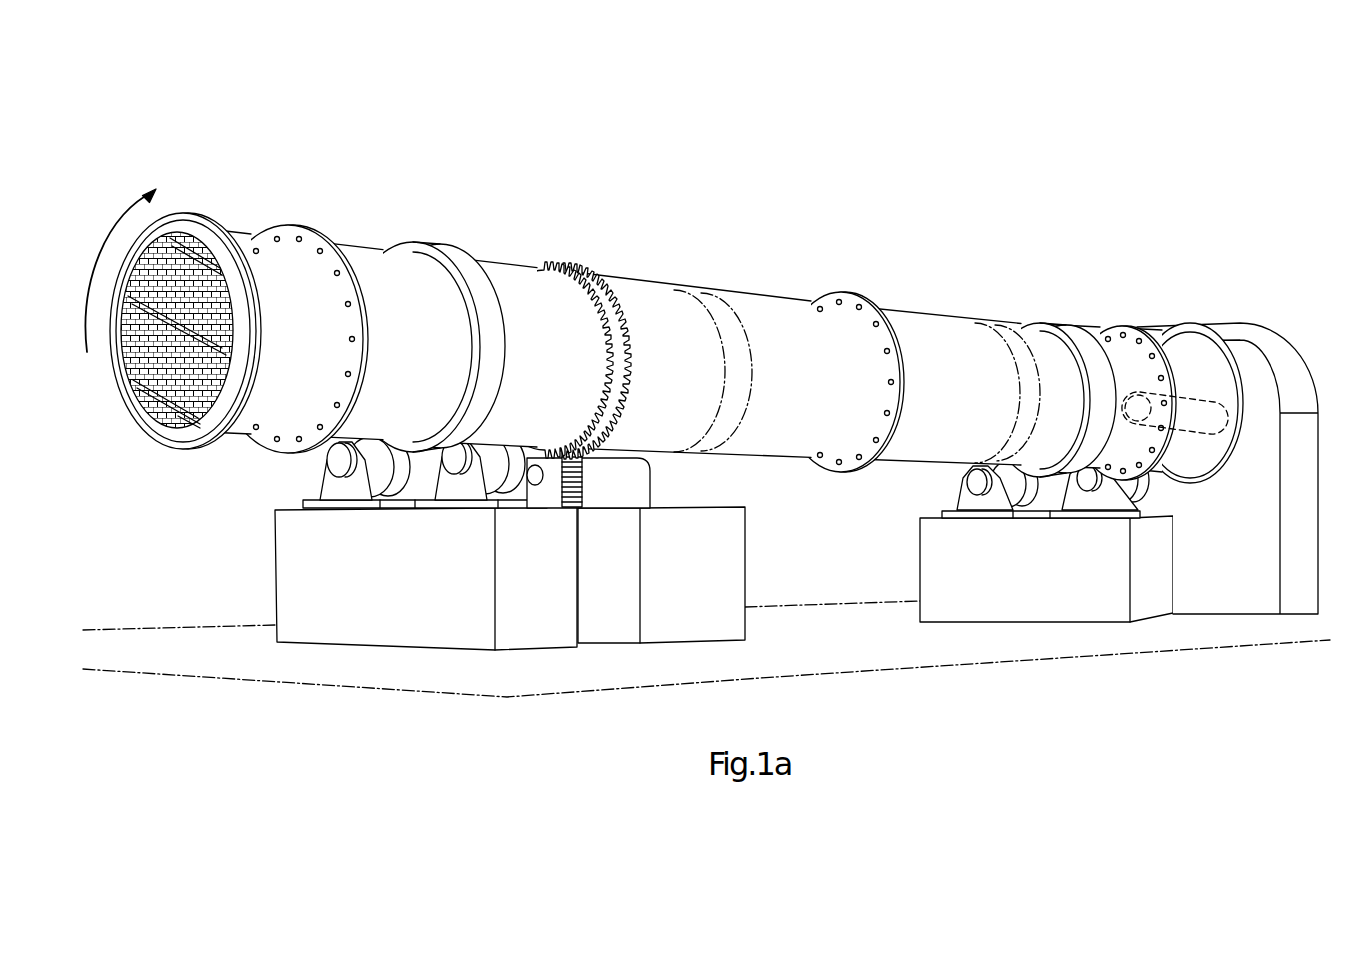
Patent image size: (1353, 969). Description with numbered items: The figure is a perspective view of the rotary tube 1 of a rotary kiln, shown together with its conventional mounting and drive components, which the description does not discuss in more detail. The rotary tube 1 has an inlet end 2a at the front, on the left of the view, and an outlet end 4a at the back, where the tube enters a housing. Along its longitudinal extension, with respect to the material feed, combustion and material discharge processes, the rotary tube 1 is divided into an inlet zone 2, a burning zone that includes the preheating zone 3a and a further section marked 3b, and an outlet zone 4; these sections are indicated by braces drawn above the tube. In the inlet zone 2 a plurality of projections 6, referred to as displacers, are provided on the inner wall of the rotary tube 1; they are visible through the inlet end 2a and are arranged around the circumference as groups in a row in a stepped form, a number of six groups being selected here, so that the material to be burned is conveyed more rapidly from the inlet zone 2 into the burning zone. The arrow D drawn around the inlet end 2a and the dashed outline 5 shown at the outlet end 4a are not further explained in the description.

The rotary tube 1 is at (702, 377).
The inlet zone 2 is at (172, 309).
The inlet end 2a is at (128, 413).
The preheating zone 3a is at (637, 226).
The second drum section 3b is at (1112, 277).
The outlet zone 4 is at (1186, 426).
The outlet end 4a is at (1283, 342).
The outlet opening 5 is at (1182, 427).
The projections 6 is at (145, 166).
The direction of rotation D is at (115, 228).